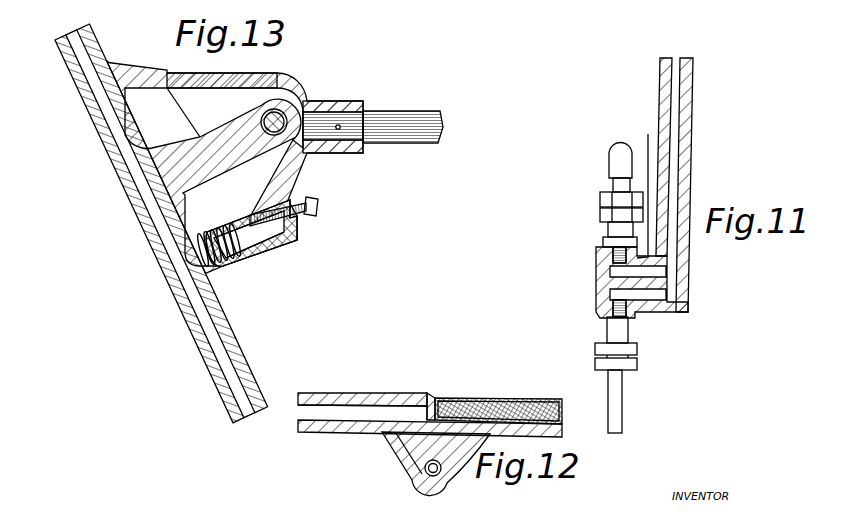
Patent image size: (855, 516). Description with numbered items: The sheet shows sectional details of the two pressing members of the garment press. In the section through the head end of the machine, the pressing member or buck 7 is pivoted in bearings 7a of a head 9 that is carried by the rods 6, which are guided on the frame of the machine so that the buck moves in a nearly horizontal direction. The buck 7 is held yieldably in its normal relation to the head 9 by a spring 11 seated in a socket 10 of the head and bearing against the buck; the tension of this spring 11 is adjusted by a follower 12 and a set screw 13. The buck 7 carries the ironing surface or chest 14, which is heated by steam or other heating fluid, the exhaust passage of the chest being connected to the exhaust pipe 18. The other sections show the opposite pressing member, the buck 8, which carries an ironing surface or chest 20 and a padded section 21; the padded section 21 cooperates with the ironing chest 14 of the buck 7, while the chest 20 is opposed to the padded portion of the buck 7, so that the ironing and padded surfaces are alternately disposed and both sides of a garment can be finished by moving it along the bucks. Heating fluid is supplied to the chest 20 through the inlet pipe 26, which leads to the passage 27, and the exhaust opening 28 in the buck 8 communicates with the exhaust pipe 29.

In FIG. 13, the rods 6 is at (406, 128).
In FIG. 13, the buck 7 is at (227, 332).
In FIG. 13, the bearings 7a is at (283, 116).
In FIG. 13, the head 9 is at (230, 88).
In FIG. 13, the socket 10 is at (258, 258).
In FIG. 13, the spring 11 is at (240, 264).
In FIG. 13, the follower 12 is at (270, 240).
In FIG. 13, the set screw 13 is at (312, 214).
In FIG. 13, the ironing surface or chest 14 is at (207, 346).
In FIG. 12, the buck 8 is at (430, 404).
In FIG. 12, the ironing surface or chest 20 is at (408, 394).
In FIG. 12, the padded section 21 is at (492, 398).
In FIG. 12, the exhaust opening 28 is at (420, 448).
In FIG. 11, the exhaust opening 28 is at (647, 294).
In FIG. 12, the pipe 29 is at (427, 472).
In FIG. 11, the pipe 29 is at (612, 398).
In FIG. 11, the exhaust pipe 18 is at (700, 157).
In FIG. 11, the inlet pipe 26 is at (616, 163).
In FIG. 11, the passage 27 is at (648, 140).